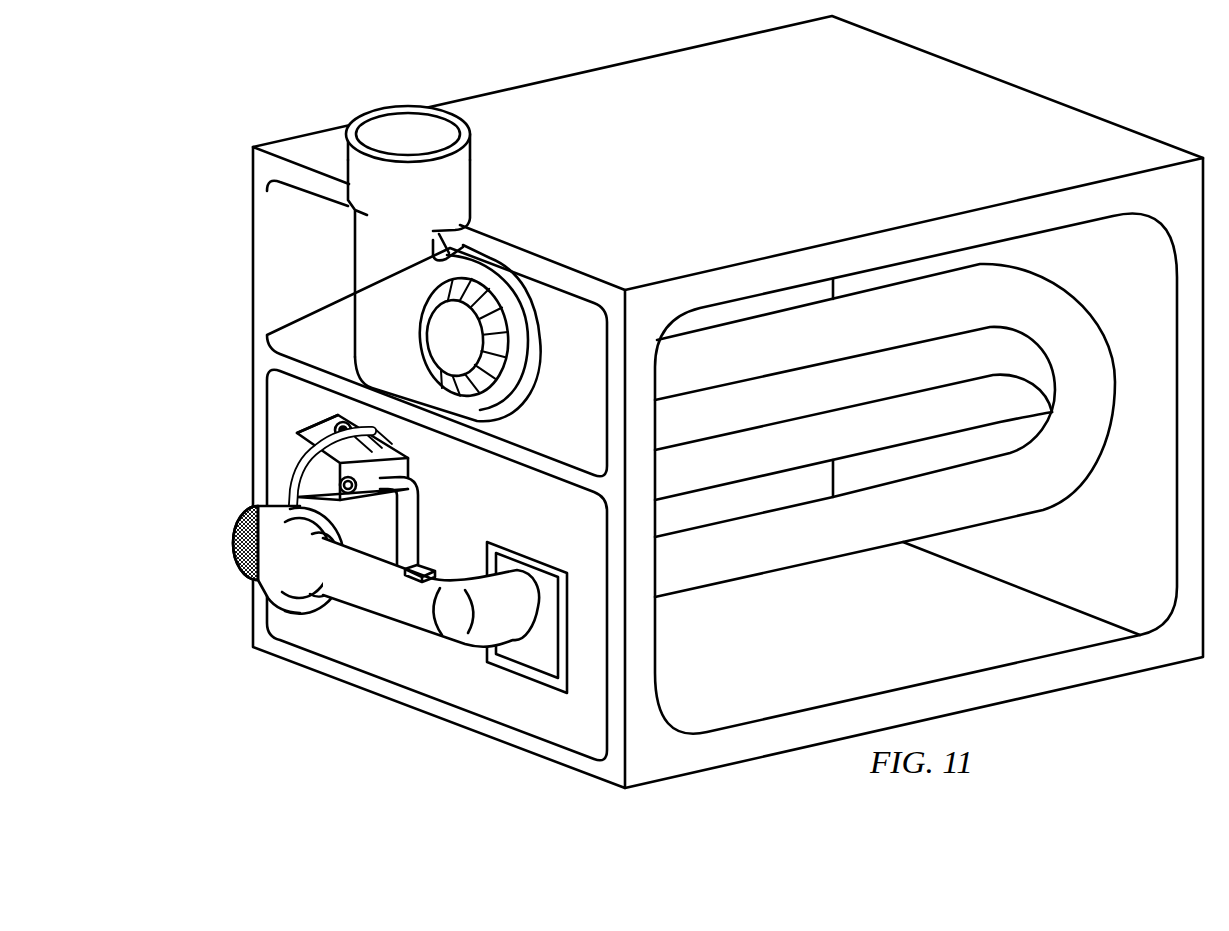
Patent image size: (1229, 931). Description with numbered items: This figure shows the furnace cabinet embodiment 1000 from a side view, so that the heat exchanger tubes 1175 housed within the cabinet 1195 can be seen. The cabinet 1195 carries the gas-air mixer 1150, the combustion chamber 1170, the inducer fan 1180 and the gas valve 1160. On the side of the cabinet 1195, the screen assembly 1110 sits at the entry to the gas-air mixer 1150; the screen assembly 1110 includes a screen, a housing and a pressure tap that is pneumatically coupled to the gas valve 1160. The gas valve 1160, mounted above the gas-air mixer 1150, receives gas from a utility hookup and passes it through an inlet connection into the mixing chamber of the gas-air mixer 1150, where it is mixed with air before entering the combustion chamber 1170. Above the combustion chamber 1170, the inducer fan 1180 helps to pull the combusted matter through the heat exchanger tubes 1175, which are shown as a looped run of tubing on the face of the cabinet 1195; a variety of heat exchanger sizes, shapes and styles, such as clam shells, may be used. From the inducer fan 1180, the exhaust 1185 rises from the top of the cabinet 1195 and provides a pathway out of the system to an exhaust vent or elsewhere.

The furnace cabinet embodiment 1000 is at (378, 56).
The cabinet 1195 is at (761, 168).
The exhaust 1185 is at (458, 183).
The inducer fan 1180 is at (444, 338).
The combustion chamber 1170 is at (554, 521).
The heat exchanger tubes 1175 is at (995, 314).
The gas valve 1160 is at (300, 413).
The screen assembly 1110 is at (241, 514).
The gas-air mixer 1150 is at (342, 630).